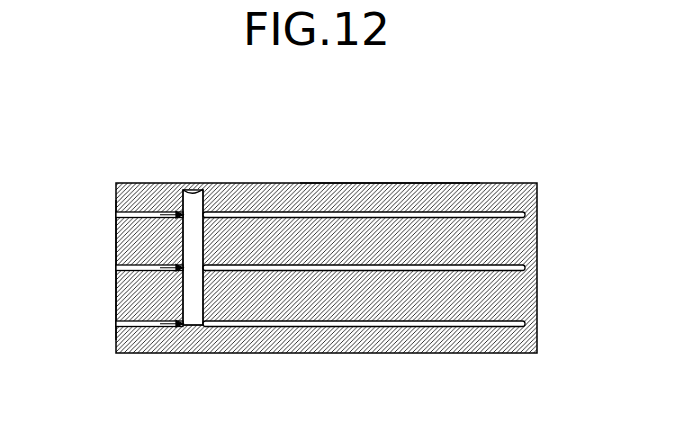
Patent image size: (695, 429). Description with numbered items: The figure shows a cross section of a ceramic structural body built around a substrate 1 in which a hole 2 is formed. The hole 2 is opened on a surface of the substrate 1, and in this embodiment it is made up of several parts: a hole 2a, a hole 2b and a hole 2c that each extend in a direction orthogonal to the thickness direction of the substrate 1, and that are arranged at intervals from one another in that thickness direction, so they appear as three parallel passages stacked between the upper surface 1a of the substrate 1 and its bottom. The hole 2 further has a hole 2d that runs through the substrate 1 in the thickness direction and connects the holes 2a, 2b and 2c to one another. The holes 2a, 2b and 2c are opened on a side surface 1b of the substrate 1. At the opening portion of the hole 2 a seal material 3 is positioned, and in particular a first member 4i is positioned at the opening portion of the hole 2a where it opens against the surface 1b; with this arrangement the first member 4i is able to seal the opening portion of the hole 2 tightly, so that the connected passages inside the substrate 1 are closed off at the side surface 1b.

The substrate 1 is at (449, 342).
The upper surface of body 1a is at (391, 182).
The surface of substrate 1b is at (115, 247).
The hole 2 is at (382, 305).
The hole 2a is at (525, 268).
The hole 2b is at (525, 215).
The hole 2c is at (525, 324).
The hole 2d is at (193, 305).
The seal material 3 is at (193, 182).
The first member 4i is at (176, 215).